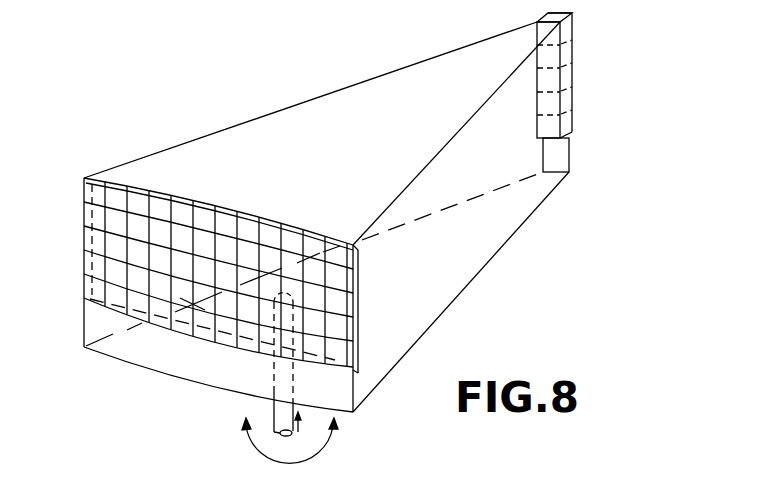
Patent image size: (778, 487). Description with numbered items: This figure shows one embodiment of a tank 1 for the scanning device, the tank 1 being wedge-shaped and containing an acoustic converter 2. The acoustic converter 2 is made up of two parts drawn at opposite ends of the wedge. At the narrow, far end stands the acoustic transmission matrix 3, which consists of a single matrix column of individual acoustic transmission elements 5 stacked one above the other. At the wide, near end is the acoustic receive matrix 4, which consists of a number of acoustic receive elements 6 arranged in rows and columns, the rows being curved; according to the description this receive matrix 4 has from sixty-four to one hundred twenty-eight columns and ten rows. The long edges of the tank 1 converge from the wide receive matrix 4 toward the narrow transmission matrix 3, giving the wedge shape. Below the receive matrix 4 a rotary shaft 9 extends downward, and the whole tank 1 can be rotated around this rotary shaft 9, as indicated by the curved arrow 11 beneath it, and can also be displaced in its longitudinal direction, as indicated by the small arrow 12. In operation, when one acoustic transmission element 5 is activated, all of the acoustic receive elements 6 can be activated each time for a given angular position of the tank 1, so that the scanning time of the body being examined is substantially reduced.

The tank 1 is at (482, 267).
The acoustic converter 2 is at (74, 201).
The acoustic transmission matrix 3 is at (572, 13).
The acoustic receive matrix 4 is at (385, 311).
The acoustic transmission element 5 is at (547, 82).
The acoustic receive element 6 is at (207, 223).
The rotary shaft 9 is at (274, 406).
The arrow 11 is at (262, 460).
The arrow 12 is at (306, 425).